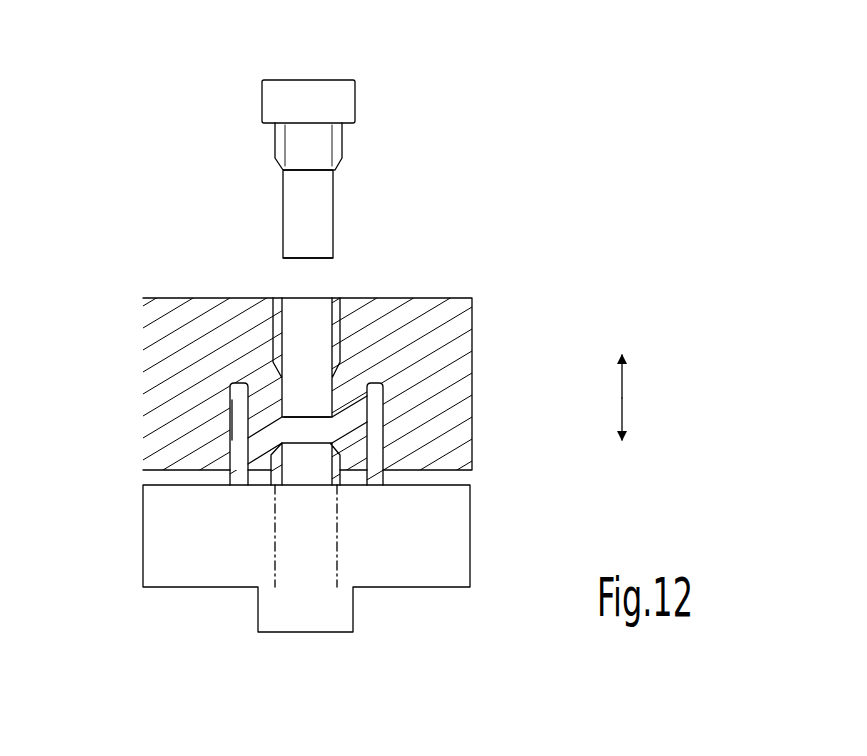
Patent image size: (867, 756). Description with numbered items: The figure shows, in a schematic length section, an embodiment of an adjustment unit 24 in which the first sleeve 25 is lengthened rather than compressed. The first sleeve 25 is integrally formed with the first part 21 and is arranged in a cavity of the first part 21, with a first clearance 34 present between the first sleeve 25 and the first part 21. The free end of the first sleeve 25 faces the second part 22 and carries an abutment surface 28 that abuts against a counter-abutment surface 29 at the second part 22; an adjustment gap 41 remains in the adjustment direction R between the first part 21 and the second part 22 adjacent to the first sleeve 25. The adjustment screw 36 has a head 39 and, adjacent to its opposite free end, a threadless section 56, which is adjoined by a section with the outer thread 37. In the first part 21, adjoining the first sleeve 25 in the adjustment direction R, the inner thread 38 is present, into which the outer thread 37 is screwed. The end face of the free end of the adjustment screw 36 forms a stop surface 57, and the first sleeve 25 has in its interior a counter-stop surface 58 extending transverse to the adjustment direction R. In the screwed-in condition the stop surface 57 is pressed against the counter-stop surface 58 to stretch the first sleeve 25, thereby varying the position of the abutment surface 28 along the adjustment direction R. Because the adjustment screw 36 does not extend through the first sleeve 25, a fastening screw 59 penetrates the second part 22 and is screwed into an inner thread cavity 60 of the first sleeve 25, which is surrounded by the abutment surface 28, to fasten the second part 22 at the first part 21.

The first part 21 is at (447, 352).
The second part 22 is at (473, 530).
The adjustment unit 24 is at (558, 206).
The first sleeve 25 is at (343, 403).
The abutment surface 28 is at (256, 489).
The counter-abutment surface 29 is at (349, 474).
The first clearance 34 is at (237, 407).
The adjustment screw 36 is at (353, 146).
The outer thread 37 is at (342, 155).
The inner thread 38 is at (379, 300).
The head 39 is at (308, 98).
The adjustment gap 41 is at (145, 477).
The threadless section 56 is at (320, 230).
The stop surface 57 is at (290, 265).
The counter-stop surface 58 is at (298, 406).
The fastening screw 59 is at (341, 530).
The inner thread cavity 60 is at (281, 465).
The adjustment direction R is at (624, 394).